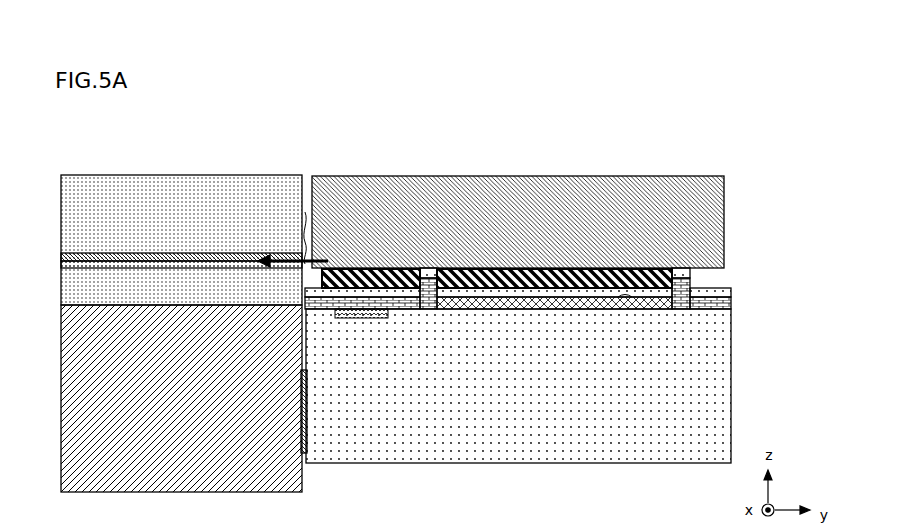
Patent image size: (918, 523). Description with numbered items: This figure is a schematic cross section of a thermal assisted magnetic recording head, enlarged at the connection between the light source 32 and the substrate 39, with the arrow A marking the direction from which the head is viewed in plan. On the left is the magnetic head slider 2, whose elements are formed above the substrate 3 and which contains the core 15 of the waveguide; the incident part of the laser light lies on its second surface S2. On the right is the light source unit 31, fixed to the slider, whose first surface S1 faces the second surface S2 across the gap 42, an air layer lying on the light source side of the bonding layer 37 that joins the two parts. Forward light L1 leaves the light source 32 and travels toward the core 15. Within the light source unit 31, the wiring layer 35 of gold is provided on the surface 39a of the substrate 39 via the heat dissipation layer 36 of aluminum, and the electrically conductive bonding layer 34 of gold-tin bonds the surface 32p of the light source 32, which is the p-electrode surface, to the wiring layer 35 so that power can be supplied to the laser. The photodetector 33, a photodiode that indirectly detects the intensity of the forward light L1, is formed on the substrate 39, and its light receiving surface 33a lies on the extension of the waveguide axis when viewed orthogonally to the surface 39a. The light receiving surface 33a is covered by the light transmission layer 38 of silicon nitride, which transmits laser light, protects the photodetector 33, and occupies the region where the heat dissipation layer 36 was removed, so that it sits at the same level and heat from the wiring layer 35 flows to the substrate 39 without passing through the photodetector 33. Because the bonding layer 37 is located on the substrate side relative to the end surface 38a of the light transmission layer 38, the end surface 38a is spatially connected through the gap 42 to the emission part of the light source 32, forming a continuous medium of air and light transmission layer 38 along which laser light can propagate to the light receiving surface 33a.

The magnetic head slider 2 is at (201, 165).
The substrate 3 is at (78, 359).
The core 15 is at (76, 258).
The light source unit 31 is at (478, 165).
The light source 32 is at (718, 222).
The surface of light source 32p is at (552, 270).
The photodetector 33 is at (370, 305).
The light receiving surface 33a is at (356, 320).
The bonding layer 34 is at (440, 300).
The wiring layer 35 is at (700, 280).
The heat dissipation layer 36 is at (577, 306).
The bonding layer 37 is at (308, 442).
The light transmission layer 38 is at (320, 310).
The end surface 38a is at (304, 300).
The substrate 39 is at (718, 372).
The surface of substrate 39a is at (626, 298).
The gap 42 is at (302, 213).
The first surface S1 is at (314, 178).
The second surface S2 is at (303, 236).
The forward light L1 is at (303, 256).
The direction A is at (447, 149).